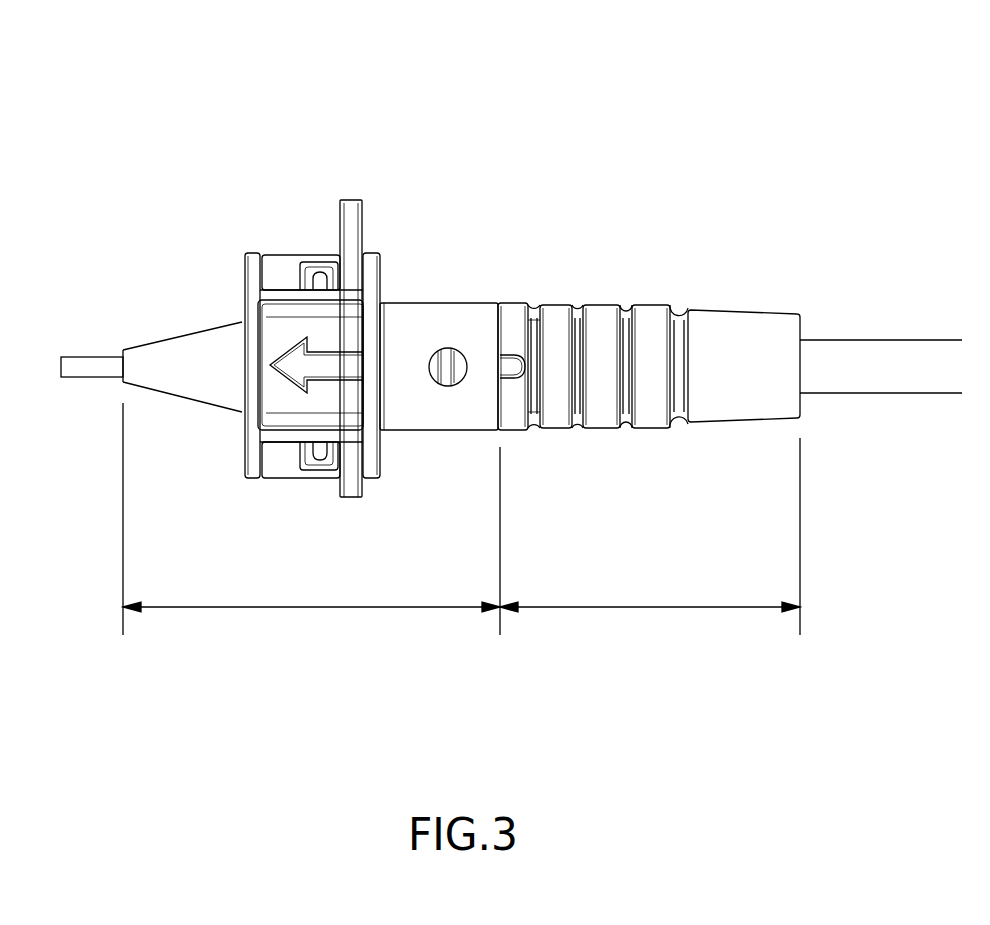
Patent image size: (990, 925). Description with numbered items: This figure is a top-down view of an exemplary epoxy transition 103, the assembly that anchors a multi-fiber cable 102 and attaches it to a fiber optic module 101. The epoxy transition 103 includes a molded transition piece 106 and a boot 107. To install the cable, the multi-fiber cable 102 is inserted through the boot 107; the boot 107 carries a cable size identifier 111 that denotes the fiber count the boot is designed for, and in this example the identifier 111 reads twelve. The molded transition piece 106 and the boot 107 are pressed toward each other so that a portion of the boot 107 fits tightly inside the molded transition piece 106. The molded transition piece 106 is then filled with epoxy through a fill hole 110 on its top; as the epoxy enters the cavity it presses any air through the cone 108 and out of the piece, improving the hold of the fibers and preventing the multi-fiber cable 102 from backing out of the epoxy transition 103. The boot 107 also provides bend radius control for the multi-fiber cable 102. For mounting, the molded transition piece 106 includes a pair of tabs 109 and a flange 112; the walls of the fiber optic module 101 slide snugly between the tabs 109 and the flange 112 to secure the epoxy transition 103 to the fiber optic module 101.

The fiber optic module 101 is at (362, 208).
The multi-fiber cable 102 is at (865, 393).
The epoxy transition 103 is at (649, 98).
The molded transition piece 106 is at (311, 519).
The boot 107 is at (650, 536).
The cone 108 is at (160, 340).
The tabs 109 is at (322, 277).
The fill hole 110 is at (448, 350).
The cable size identifier 111 is at (735, 348).
The flange 112 is at (380, 255).